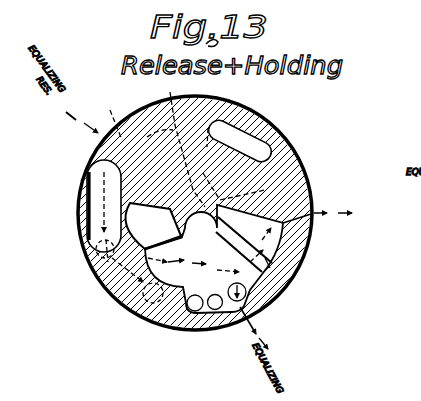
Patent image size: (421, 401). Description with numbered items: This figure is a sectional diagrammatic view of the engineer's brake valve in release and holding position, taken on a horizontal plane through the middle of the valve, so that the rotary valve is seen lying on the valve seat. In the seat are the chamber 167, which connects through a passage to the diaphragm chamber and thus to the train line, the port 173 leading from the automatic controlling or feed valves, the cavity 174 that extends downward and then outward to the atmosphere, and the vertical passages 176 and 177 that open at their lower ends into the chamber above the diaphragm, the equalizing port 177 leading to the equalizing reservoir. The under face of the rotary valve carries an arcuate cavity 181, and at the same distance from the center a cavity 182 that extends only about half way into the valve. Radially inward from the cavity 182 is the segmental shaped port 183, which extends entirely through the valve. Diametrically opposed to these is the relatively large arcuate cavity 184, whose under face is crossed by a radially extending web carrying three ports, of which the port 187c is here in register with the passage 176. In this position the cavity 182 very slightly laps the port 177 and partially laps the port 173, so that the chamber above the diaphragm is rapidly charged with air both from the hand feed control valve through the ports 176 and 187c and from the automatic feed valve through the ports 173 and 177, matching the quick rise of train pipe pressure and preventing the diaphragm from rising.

The cavity or chamber 174 is at (178, 98).
The equalizing port 177 is at (181, 149).
The arcuate cavity 181 is at (244, 141).
The cavity 182 is at (96, 199).
The port 173 is at (97, 248).
The segmental shaped port 183 is at (153, 226).
The chamber 167 is at (291, 244).
The arcuate cavity 184 is at (265, 275).
The vertical passage 176 is at (248, 300).
The port 187c is at (230, 311).